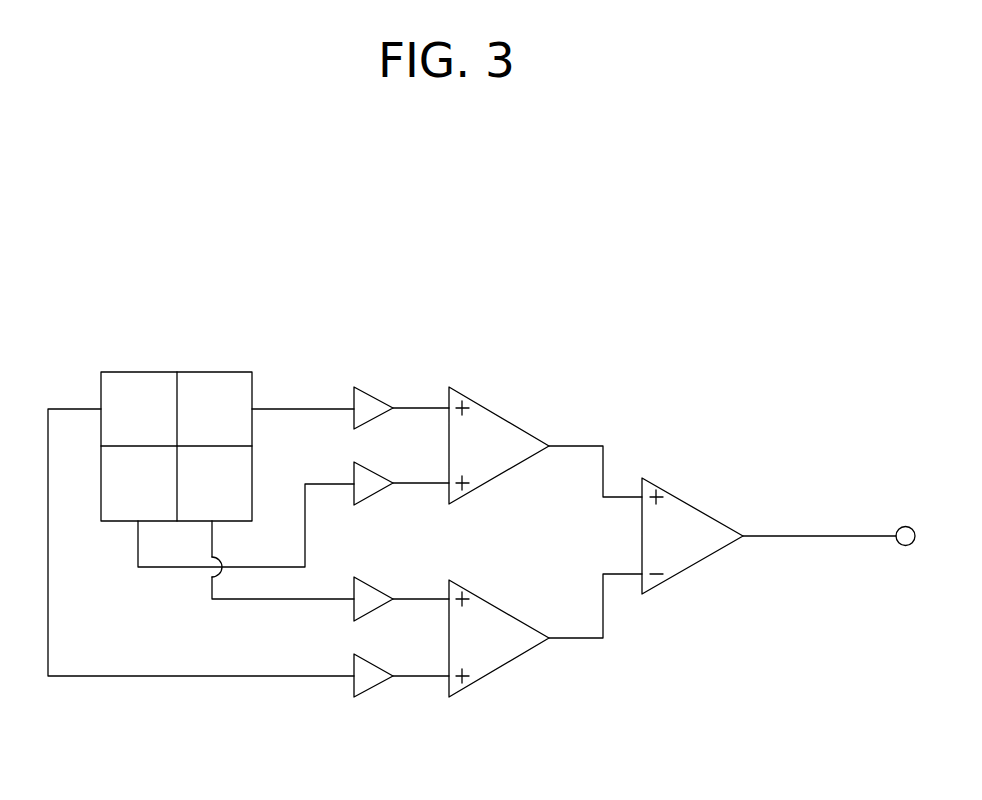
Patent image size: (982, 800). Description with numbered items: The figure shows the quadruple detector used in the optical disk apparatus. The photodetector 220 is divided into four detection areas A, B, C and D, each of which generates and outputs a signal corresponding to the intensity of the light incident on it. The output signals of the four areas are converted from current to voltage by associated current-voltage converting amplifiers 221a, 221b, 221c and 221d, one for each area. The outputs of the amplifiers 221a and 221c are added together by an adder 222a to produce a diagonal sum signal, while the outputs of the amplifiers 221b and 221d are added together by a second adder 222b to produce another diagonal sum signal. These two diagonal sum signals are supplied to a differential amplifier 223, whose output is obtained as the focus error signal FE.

The photodetector 220 is at (209, 372).
The current-voltage converting amplifier 221a is at (373, 398).
The current-voltage converting amplifier 221b is at (368, 690).
The current-voltage converting amplifier 221c is at (366, 499).
The current-voltage converting amplifier 221d is at (358, 583).
The adder 222a is at (499, 415).
The adder 222b is at (499, 668).
The differential amplifier 223 is at (706, 515).